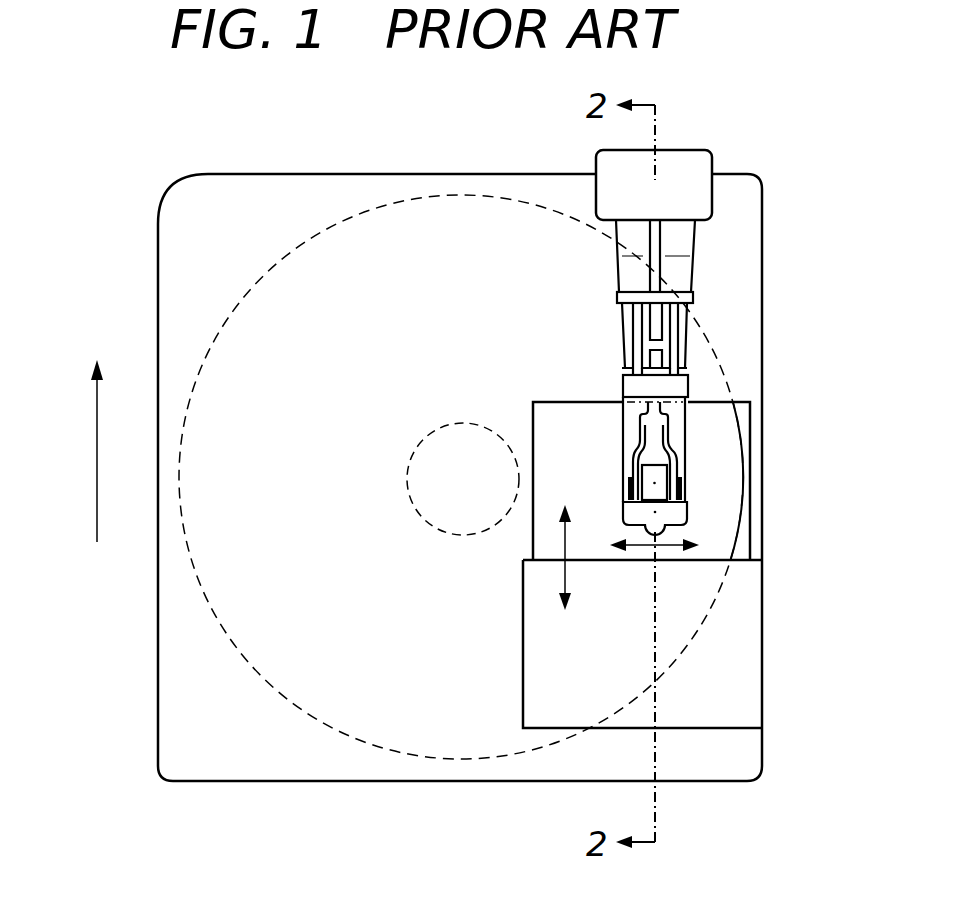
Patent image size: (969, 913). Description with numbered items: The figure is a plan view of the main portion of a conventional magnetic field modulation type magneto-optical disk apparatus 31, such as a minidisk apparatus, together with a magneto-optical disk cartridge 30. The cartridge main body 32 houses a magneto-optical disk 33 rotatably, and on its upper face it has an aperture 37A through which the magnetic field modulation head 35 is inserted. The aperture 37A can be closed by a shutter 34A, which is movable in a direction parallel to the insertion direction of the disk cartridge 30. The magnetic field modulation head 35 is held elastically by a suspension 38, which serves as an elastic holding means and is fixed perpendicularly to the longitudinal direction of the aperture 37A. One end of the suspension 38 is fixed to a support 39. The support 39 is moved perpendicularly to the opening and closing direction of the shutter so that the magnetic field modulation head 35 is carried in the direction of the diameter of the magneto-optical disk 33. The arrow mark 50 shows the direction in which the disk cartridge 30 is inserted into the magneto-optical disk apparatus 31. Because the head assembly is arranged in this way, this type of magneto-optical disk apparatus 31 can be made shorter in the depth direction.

The magneto-optical disk cartridge 30 is at (780, 663).
The magneto-optical disk apparatus 31 is at (688, 115).
The cartridge main body 32 is at (255, 782).
The magneto-optical disk 33 is at (222, 632).
The shutter 34A is at (714, 730).
The magnetic field modulation head 35 is at (673, 481).
The aperture 37A is at (715, 402).
The suspension 38 is at (683, 278).
The support 39 is at (692, 162).
The arrow mark 50 is at (97, 508).